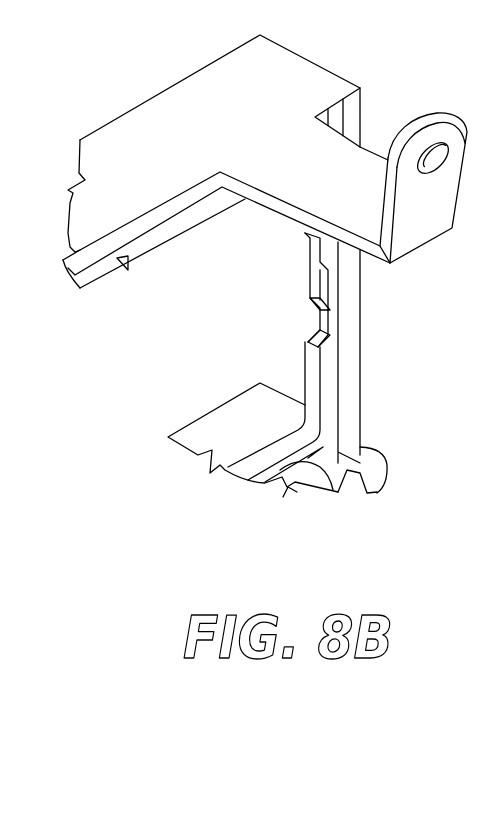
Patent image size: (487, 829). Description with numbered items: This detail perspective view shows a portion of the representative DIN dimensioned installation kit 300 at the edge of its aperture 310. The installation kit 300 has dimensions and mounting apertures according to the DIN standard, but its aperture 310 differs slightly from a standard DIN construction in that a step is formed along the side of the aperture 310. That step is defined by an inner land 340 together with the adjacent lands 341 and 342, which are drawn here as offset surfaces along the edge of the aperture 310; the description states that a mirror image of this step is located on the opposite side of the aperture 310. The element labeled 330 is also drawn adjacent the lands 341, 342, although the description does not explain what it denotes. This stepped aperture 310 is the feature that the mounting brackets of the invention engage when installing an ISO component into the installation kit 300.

The installation kit 300 is at (236, 130).
The aperture 310 is at (300, 371).
The rod 330 is at (337, 376).
The inner land 340 is at (314, 281).
The land 341 is at (333, 255).
The land 342 is at (332, 324).